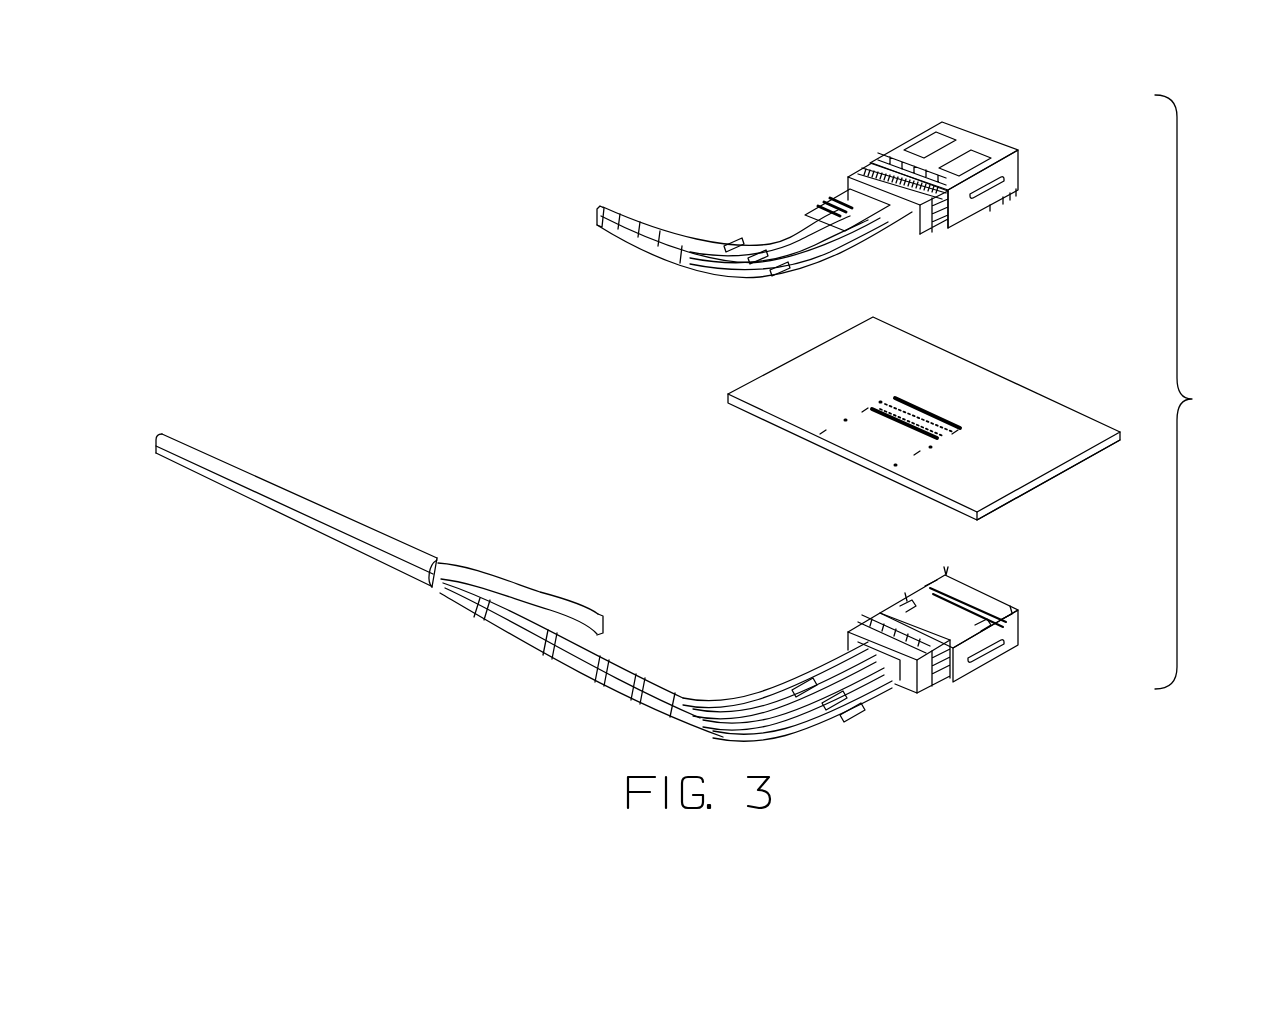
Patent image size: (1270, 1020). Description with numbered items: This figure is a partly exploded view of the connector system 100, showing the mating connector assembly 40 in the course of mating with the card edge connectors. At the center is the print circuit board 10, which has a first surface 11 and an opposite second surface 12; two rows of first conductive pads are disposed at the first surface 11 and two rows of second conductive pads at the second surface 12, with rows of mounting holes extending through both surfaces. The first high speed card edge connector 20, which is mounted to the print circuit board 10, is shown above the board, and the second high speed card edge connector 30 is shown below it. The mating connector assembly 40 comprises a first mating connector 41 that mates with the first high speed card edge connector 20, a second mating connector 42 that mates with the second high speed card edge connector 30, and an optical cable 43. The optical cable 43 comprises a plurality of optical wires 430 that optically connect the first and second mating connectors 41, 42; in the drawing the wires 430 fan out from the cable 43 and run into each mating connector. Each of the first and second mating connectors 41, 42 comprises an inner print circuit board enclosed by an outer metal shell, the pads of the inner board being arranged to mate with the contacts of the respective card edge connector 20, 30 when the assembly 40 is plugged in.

The connector system 100 is at (1201, 392).
The print circuit board 10 is at (1040, 420).
The first surface 11 is at (953, 385).
The second surface 12 is at (1063, 474).
The first high speed card edge connector 20 is at (958, 135).
The second high speed card edge connector 30 is at (987, 648).
The mating connector assembly 40 is at (778, 703).
The first mating connector 41 is at (855, 182).
The second mating connector 42 is at (923, 688).
The optical cable 43 is at (390, 547).
The optical wires 430 is at (638, 227).